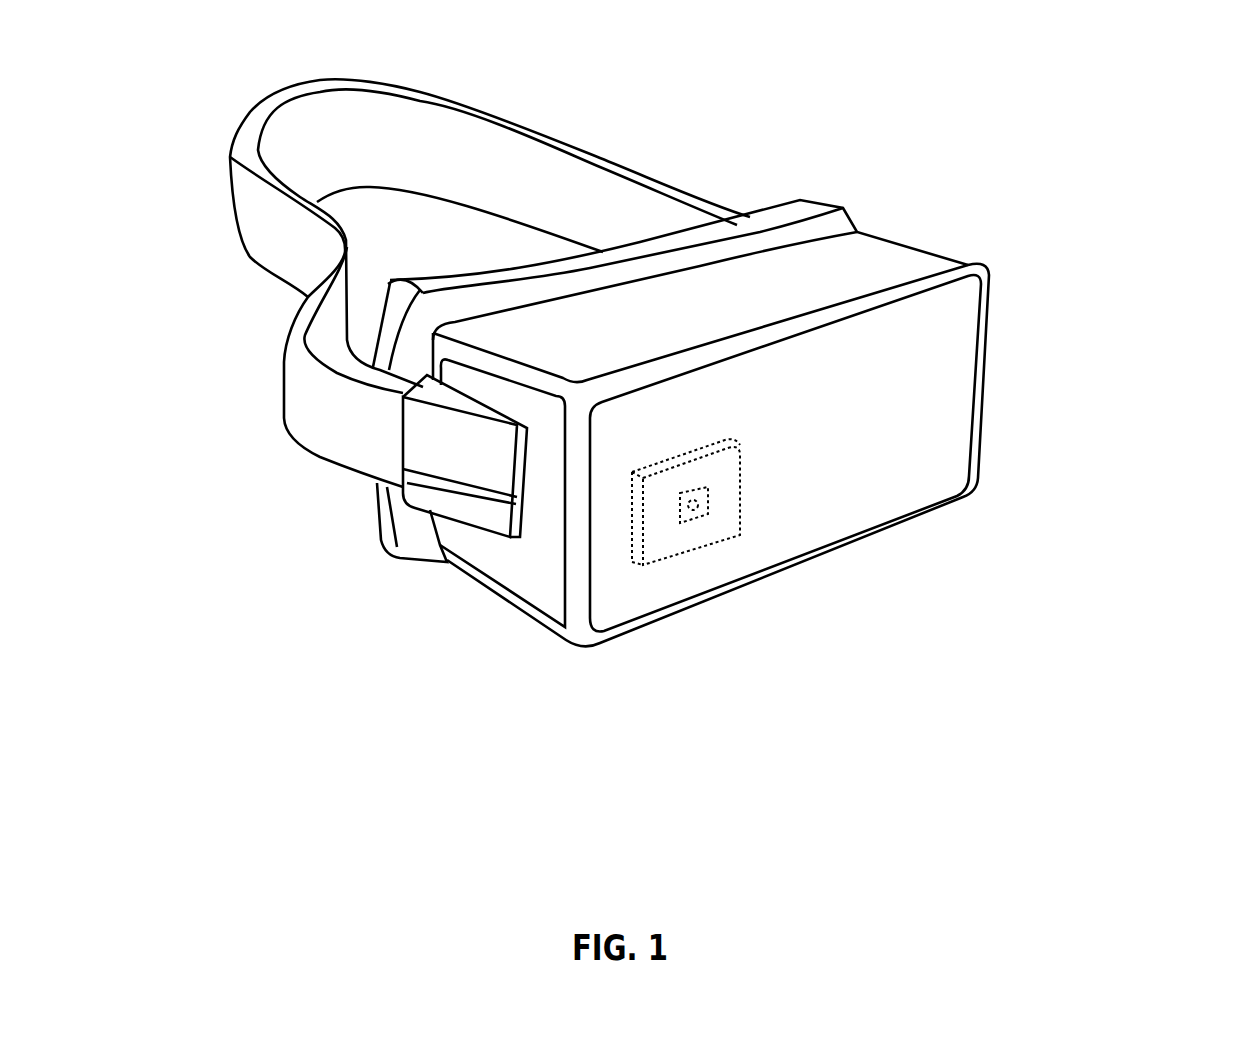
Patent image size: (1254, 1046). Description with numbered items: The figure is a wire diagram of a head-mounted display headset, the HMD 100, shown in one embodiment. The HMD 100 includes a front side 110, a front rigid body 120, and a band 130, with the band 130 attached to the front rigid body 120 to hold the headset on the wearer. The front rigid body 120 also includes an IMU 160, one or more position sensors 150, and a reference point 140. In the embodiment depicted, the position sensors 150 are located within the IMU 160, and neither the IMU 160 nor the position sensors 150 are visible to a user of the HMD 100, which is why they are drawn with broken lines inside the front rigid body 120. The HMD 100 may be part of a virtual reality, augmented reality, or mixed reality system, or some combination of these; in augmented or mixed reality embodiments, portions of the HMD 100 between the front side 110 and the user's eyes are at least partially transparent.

The HMD 100 is at (133, 66).
The front side 110 is at (878, 450).
The front rigid body 120 is at (794, 389).
The band 130 is at (618, 163).
The reference point 140 is at (693, 512).
The position sensors 150 is at (680, 525).
The IMU 160 is at (836, 638).